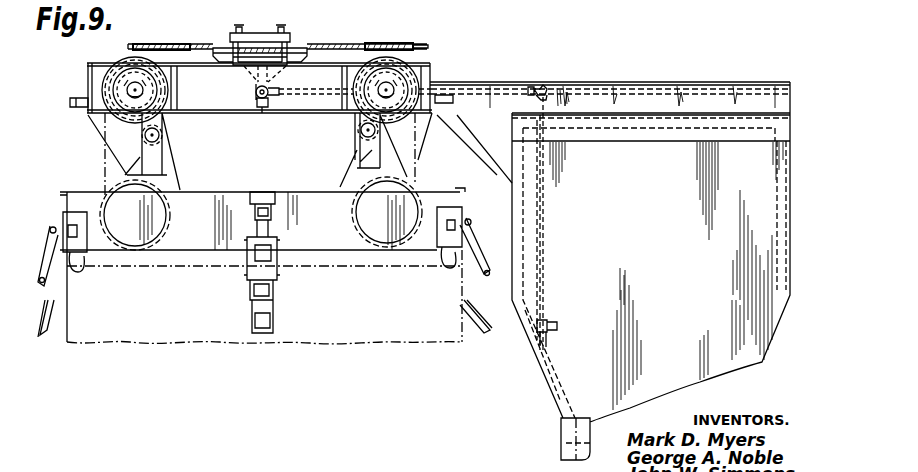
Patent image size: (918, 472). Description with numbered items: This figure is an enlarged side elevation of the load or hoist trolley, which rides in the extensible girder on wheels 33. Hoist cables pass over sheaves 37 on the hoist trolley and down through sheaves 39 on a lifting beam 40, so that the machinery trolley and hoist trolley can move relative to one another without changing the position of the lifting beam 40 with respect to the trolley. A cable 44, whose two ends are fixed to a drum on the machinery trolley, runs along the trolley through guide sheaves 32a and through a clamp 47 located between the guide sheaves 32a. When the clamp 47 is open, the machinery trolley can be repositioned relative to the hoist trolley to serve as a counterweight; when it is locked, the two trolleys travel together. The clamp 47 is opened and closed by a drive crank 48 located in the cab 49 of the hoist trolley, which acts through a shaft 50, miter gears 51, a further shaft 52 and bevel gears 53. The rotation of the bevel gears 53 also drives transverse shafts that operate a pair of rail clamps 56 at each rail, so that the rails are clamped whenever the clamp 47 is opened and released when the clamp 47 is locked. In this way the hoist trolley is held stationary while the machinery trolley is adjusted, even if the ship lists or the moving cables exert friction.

The guide sheaves 32a is at (178, 44).
The clamp 47 is at (272, 12).
The cable 44 is at (427, 44).
The shaft 52 is at (483, 88).
The miter gears 51 is at (545, 87).
The sheaves 37 is at (168, 92).
The wheels 33 is at (165, 105).
The bevel gears 53 is at (275, 108).
The sheaves 39 is at (168, 226).
The rail clamps 56 is at (278, 274).
The lifting beam 40 is at (68, 294).
The shaft 50 is at (545, 228).
The cab 49 is at (688, 240).
The drive crank 48 is at (558, 331).